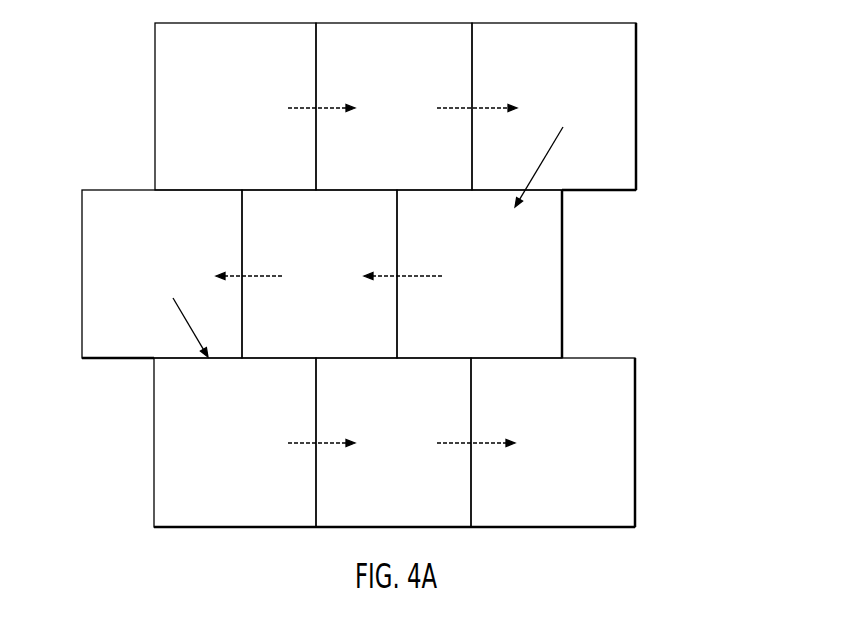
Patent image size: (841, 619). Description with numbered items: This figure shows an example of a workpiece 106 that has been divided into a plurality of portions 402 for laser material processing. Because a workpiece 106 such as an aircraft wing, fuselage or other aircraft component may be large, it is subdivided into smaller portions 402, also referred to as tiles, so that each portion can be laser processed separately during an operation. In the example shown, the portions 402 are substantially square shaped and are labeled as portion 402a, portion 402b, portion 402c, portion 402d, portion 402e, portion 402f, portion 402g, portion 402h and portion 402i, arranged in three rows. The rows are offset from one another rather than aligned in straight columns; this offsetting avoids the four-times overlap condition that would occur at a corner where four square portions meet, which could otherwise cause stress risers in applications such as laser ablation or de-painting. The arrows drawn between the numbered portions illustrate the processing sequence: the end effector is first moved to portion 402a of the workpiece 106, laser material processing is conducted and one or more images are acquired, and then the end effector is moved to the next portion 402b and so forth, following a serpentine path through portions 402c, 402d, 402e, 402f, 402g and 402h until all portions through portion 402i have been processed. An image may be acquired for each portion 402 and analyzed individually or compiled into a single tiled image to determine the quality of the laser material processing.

The portions 402 is at (329, 275).
The portion 402a is at (257, 63).
The portion 402b is at (418, 63).
The portion 402c is at (580, 63).
The portion 402d is at (505, 230).
The portion 402e is at (343, 230).
The portion 402f is at (182, 230).
The portion 402g is at (255, 398).
The portion 402h is at (418, 398).
The portion 402i is at (580, 398).
The workpiece 106 is at (714, 175).